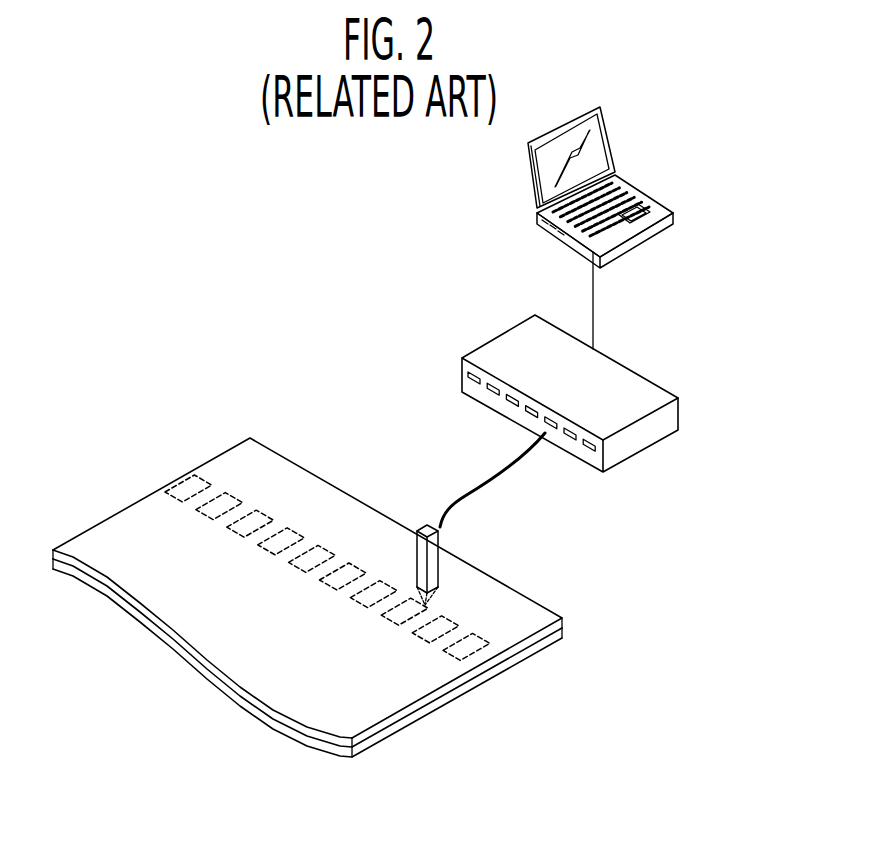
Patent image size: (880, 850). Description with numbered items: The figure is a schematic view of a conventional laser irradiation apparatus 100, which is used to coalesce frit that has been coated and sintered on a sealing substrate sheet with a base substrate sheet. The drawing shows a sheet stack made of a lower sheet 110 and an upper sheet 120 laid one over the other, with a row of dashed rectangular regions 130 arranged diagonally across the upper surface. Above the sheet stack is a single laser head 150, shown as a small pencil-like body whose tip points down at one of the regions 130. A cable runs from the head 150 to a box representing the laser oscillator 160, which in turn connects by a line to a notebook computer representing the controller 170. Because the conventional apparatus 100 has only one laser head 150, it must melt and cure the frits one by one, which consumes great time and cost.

The laser irradiation apparatus 100 is at (677, 575).
The lower substrate 110 is at (385, 736).
The upper substrate 120 is at (445, 688).
The sensing electrode patterns 130 is at (477, 655).
The probe 150 is at (428, 524).
The laser oscillator 160 is at (640, 390).
The controller 170 is at (653, 207).